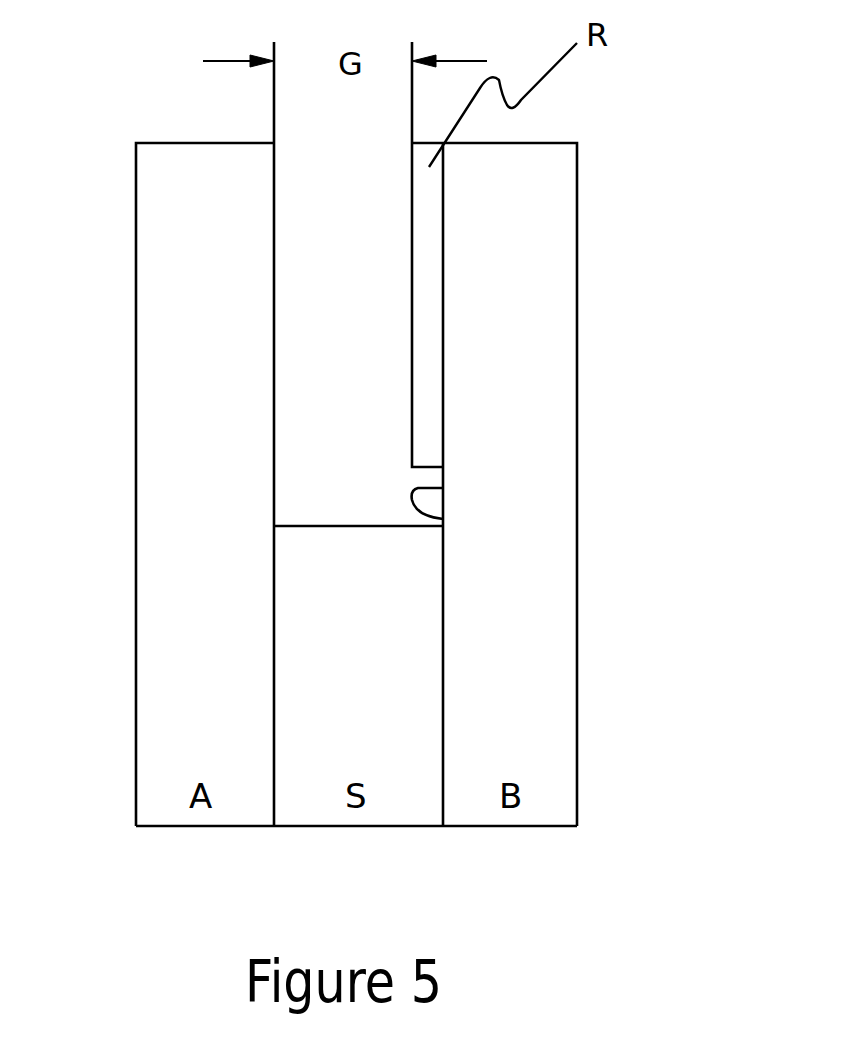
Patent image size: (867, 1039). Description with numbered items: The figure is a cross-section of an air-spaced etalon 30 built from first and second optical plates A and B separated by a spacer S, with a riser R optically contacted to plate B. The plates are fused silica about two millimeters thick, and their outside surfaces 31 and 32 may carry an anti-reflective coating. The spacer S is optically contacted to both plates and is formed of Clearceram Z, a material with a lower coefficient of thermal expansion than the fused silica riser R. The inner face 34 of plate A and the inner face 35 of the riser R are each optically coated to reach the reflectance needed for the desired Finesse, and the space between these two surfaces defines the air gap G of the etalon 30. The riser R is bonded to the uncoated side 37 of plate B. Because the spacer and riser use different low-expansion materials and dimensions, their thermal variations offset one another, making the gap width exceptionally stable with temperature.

The air-spaced etalon 30 is at (690, 110).
The outside surface of element A 31 is at (136, 360).
The outside surface of element B 32 is at (577, 270).
The inner face of element A 34 is at (274, 295).
The inner face of riser R 35 is at (412, 348).
The uncoated side of element B 37 is at (443, 521).